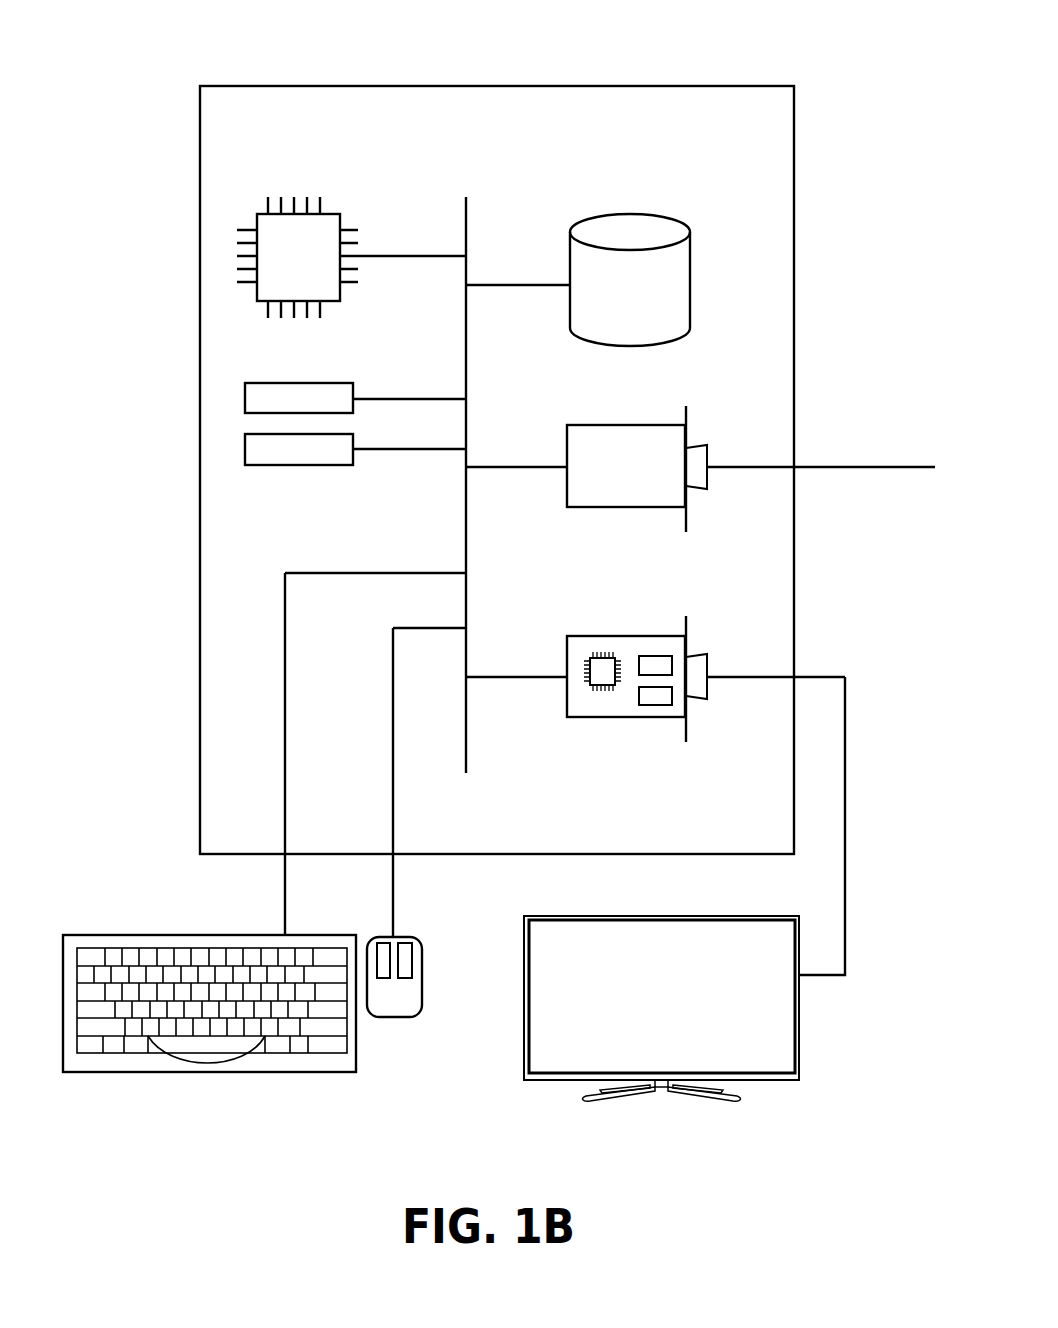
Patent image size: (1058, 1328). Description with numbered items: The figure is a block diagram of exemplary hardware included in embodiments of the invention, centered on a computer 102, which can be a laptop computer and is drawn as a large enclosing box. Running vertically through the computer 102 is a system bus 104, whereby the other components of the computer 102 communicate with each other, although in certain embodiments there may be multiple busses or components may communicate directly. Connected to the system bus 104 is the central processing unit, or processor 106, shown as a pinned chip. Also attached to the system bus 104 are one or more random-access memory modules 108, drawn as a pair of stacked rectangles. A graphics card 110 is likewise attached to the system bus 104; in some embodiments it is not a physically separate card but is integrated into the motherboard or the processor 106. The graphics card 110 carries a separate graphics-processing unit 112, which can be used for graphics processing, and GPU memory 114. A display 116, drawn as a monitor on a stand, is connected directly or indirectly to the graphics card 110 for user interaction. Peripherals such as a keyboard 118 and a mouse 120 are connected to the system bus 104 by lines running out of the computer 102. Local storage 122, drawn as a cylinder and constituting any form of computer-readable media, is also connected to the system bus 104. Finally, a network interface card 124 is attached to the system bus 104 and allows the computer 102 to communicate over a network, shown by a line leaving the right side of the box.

The computer 102 is at (738, 86).
The system bus 104 is at (467, 213).
The central processing unit 106 is at (332, 214).
The random-access memory modules 108 is at (355, 441).
The graphics card 110 is at (566, 654).
The graphics-processing unit 112 is at (602, 677).
The GPU memory 114 is at (655, 700).
The display 116 is at (800, 1043).
The keyboard 118 is at (228, 1072).
The mouse 120 is at (390, 1017).
The local storage 122 is at (692, 260).
The network interface card 124 is at (566, 444).